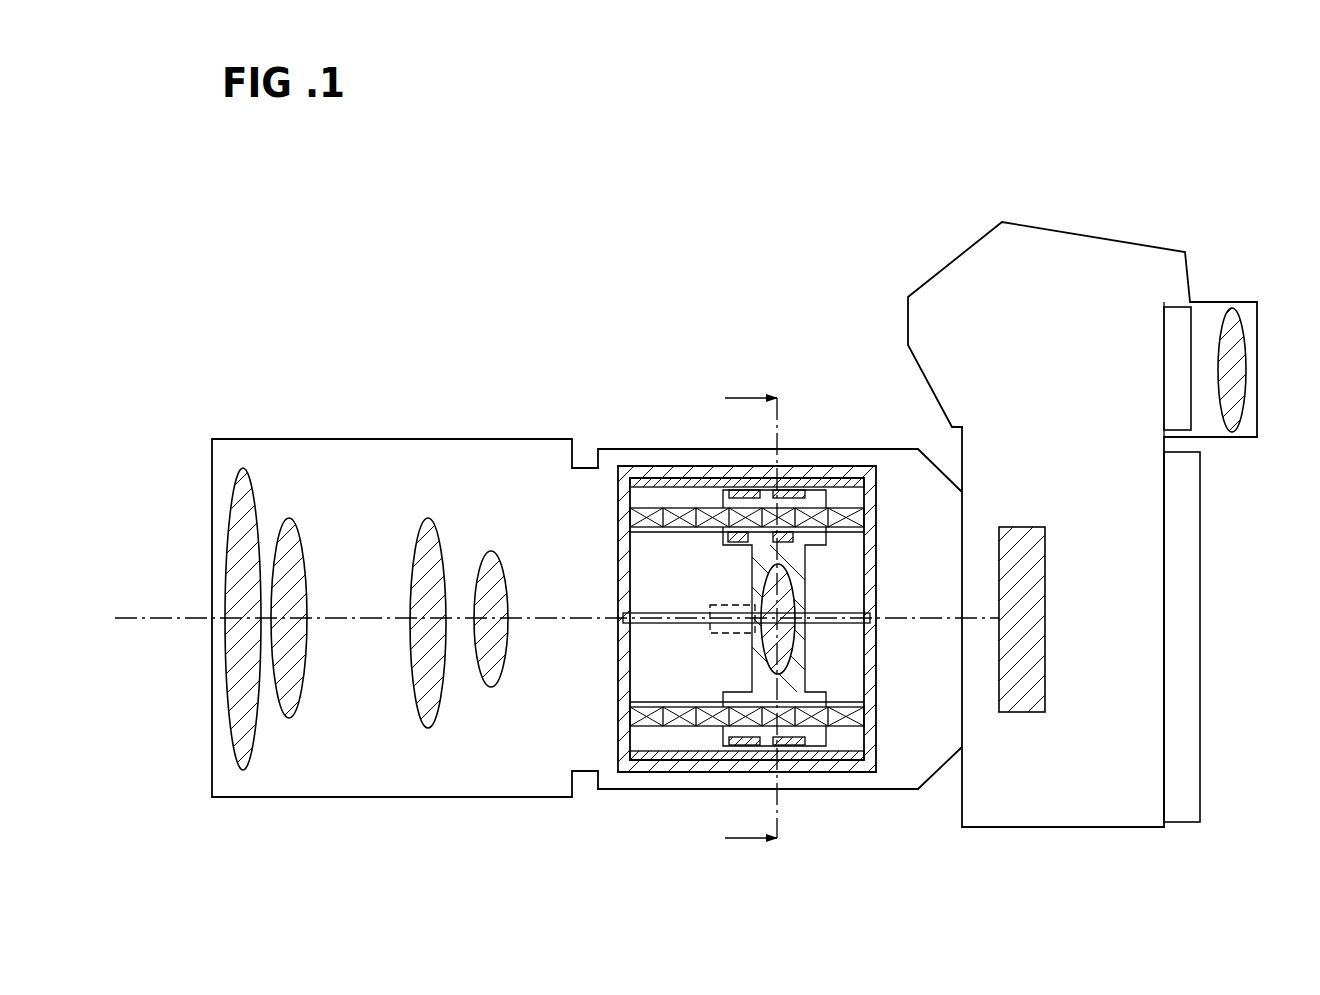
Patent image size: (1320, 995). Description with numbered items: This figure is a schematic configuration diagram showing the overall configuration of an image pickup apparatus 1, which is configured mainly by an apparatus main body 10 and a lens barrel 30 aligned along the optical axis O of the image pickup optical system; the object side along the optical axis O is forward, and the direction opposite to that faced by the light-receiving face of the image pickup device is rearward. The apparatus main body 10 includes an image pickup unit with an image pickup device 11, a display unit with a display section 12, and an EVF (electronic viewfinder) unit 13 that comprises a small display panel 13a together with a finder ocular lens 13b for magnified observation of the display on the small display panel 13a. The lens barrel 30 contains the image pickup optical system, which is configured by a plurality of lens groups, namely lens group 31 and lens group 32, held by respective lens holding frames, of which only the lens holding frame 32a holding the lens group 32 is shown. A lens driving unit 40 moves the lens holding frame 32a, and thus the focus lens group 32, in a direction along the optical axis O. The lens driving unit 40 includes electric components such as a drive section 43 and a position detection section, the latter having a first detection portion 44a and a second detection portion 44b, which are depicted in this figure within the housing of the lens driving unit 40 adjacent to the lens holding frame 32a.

The image pickup apparatus 1 is at (833, 157).
The lens barrel 30 is at (473, 262).
The apparatus main body 10 is at (923, 278).
The lens group 31 is at (290, 520).
The lens group 32 is at (752, 590).
The lens holding frame 32a is at (760, 567).
The lens driving unit 40 is at (655, 460).
The drive section 43 is at (833, 495).
The first detection portion 44a is at (747, 537).
The second detection portion 44b is at (707, 630).
The image pickup device 11 is at (1020, 545).
The display section 12 is at (1182, 641).
The EVF (electronic viewfinder) unit 13 is at (1253, 192).
The small display panel 13a is at (1173, 335).
The finder ocular lens 13b is at (1222, 330).
The optical axis O is at (143, 617).